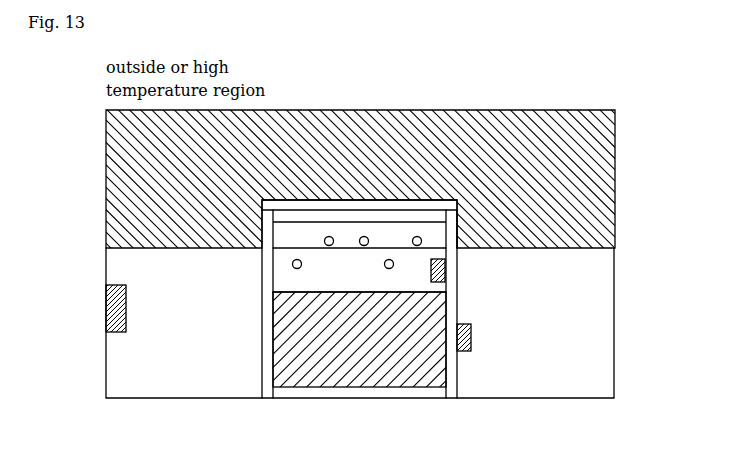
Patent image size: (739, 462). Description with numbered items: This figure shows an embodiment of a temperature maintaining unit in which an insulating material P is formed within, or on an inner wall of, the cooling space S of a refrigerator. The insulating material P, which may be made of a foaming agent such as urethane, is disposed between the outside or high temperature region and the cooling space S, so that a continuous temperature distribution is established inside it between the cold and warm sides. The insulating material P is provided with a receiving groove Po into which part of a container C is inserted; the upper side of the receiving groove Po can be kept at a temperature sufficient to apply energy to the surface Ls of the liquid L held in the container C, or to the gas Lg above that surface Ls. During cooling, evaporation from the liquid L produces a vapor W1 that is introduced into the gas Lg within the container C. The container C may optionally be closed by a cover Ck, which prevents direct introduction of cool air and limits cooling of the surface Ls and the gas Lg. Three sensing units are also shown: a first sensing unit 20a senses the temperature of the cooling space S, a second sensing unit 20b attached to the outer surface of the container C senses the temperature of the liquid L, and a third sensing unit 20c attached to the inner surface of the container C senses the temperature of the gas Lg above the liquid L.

The insulating material P is at (598, 152).
The cooling space S is at (360, 323).
The cover Ck is at (445, 199).
The container C is at (453, 370).
The receiving groove Po is at (458, 220).
The vapor W1 is at (363, 236).
The gas Lg is at (343, 266).
The surface of the liquid Ls is at (298, 290).
The liquid L is at (293, 360).
The first sensing unit 20a is at (106, 308).
The second sensing unit 20b is at (471, 336).
The third sensing unit 20c is at (445, 270).